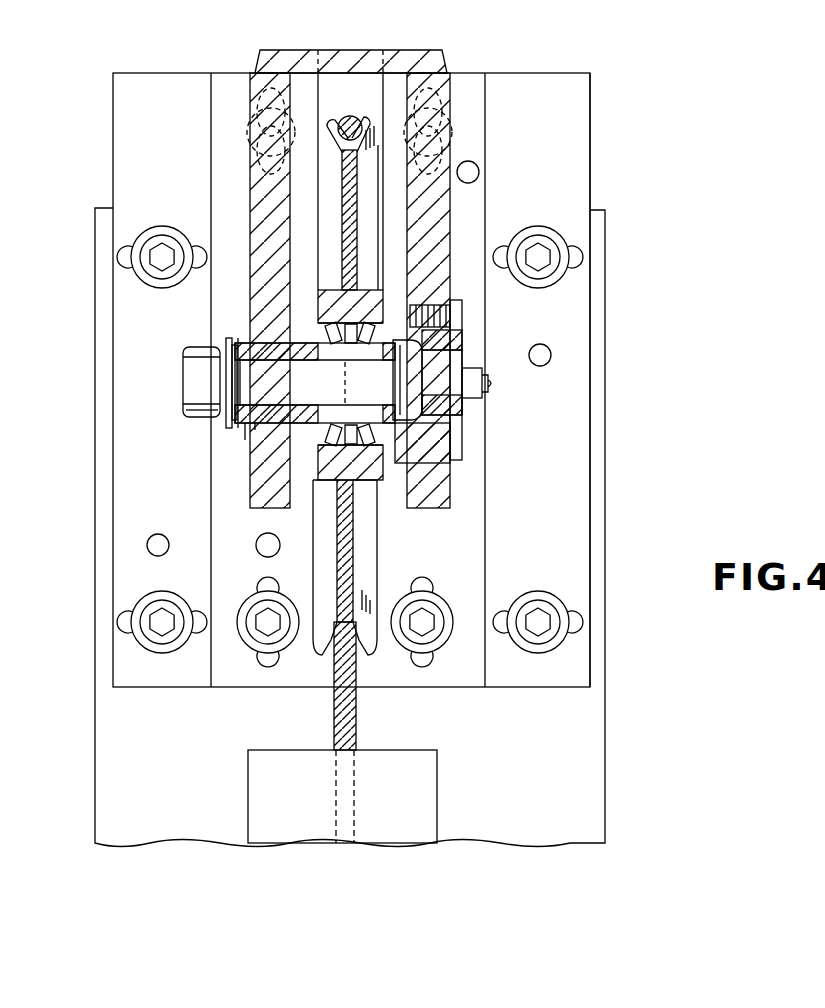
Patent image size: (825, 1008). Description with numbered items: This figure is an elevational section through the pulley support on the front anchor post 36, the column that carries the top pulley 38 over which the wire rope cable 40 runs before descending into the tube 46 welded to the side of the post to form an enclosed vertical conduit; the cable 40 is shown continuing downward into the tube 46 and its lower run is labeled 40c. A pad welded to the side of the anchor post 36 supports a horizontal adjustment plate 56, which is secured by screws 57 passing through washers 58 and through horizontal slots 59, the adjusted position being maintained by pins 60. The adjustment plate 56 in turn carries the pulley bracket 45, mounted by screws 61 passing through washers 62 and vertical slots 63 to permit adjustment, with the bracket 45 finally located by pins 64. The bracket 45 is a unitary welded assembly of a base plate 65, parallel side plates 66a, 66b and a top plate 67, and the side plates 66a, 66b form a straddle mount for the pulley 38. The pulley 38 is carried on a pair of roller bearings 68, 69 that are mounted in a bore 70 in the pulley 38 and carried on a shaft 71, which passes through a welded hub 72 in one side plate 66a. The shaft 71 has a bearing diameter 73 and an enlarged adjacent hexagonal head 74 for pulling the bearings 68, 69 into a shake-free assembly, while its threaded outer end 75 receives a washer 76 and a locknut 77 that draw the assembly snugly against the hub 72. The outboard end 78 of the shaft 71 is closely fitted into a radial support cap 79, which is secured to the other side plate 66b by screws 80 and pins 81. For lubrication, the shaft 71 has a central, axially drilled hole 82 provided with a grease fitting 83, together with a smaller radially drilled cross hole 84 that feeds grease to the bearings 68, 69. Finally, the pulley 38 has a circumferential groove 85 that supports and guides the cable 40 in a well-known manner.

The front anchor post 36 is at (605, 718).
The top pulley 38 is at (378, 560).
The cable 40 is at (362, 122).
The wire end 40c is at (358, 715).
The pulley bracket 45 is at (447, 56).
The tube 46 is at (437, 785).
The horizontal adjustment plate 56 is at (592, 95).
The screws 57 is at (545, 283).
The washers 58 is at (548, 232).
The horizontal slots 59 is at (510, 250).
The pins 60 is at (552, 360).
The screws 61 is at (248, 628).
The washers 62 is at (258, 652).
The vertical slots 63 is at (262, 590).
The pins 64 is at (258, 540).
The base plate 65 is at (488, 92).
The side plate 66a is at (250, 190).
The side plate 66b is at (452, 110).
The top plate 67 is at (410, 50).
The roller bearing 68 is at (320, 362).
The roller bearing 69 is at (362, 382).
The bore 70 is at (320, 322).
The shaft 71 is at (246, 390).
The welded hub 72 is at (255, 430).
The bearing diameter 73 is at (245, 340).
The hexagonal head 74 is at (378, 482).
The threaded outer end 75 is at (190, 362).
The washer 76 is at (228, 420).
The locknut 77 is at (190, 408).
The outboard end 78 is at (452, 412).
The radial support cap 79 is at (440, 428).
The screws 80 is at (462, 292).
The pins 81 is at (450, 460).
The axially drilled hole 82 is at (440, 362).
The grease fitting 83 is at (492, 386).
The cross hole 84 is at (395, 385).
The circumferential groove 85 is at (346, 118).